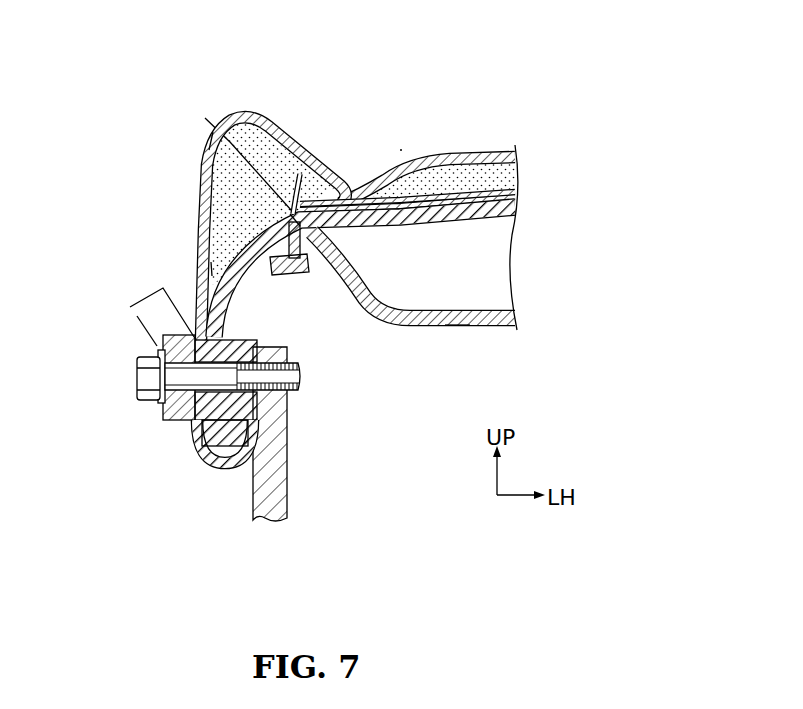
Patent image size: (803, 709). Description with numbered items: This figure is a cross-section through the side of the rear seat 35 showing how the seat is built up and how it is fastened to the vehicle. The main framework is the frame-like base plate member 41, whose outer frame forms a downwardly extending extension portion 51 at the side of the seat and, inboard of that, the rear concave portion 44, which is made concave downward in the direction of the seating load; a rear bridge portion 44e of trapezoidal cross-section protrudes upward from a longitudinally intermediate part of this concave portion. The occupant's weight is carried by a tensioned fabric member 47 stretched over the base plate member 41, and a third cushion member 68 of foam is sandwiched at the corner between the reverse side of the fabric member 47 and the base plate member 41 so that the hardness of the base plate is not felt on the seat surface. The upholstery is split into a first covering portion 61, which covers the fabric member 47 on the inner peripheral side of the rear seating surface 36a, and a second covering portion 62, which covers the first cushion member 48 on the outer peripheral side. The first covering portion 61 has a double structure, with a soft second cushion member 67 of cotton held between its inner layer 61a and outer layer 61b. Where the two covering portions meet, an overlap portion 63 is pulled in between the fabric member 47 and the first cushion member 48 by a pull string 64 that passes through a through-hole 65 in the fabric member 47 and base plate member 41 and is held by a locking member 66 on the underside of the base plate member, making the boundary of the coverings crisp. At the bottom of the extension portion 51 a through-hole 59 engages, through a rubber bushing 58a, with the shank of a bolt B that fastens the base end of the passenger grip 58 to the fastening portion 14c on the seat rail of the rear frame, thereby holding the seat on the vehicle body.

The rear seat 35 is at (472, 84).
The rear seating surface 36a is at (473, 153).
The first covering portion 61 is at (407, 131).
The inner layer 61a is at (400, 201).
The outer layer 61b is at (425, 192).
The first cushion member 48 is at (243, 142).
The overlap portion 63 is at (300, 174).
The pull string 64 is at (220, 132).
The second covering portion 62 is at (206, 160).
The second cushion member 67 is at (500, 173).
The through-hole 65 is at (297, 221).
The fabric member 47 is at (488, 211).
The third cushion member 68 is at (333, 235).
The locking member 66 is at (212, 268).
The rear concave portion 44 is at (495, 270).
The passenger grip 58 is at (138, 316).
The rubber bushing 58a is at (192, 339).
The bolt B is at (137, 383).
The base plate member 41 is at (410, 328).
The rear bridge portion 44e is at (456, 326).
The through-hole 59 is at (194, 417).
The fastening portion 14c is at (273, 458).
The extension portion 51 is at (225, 435).